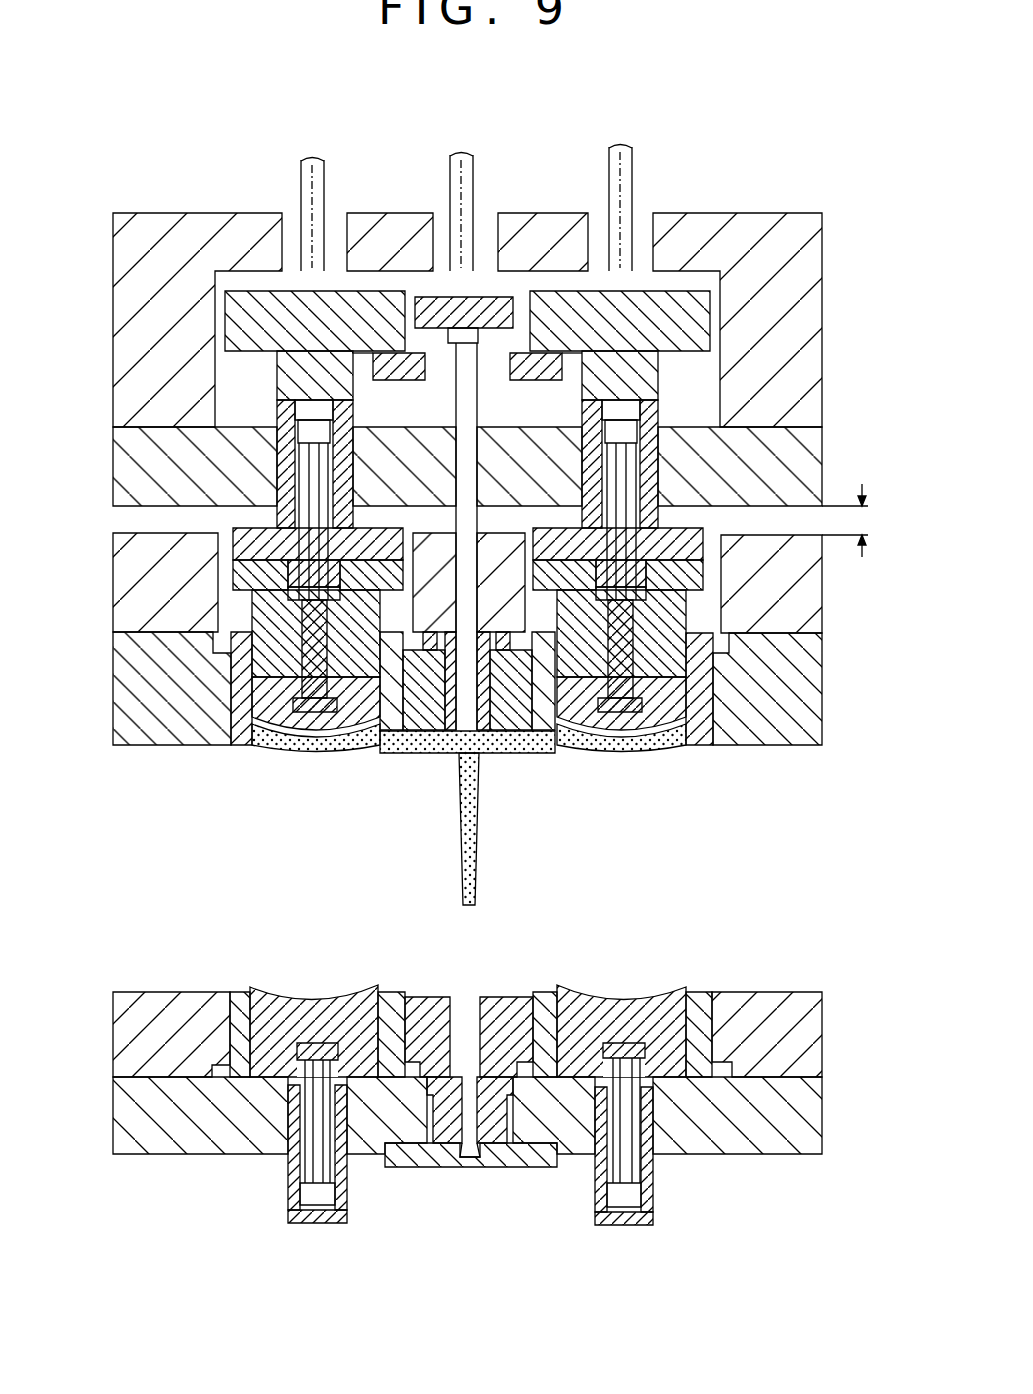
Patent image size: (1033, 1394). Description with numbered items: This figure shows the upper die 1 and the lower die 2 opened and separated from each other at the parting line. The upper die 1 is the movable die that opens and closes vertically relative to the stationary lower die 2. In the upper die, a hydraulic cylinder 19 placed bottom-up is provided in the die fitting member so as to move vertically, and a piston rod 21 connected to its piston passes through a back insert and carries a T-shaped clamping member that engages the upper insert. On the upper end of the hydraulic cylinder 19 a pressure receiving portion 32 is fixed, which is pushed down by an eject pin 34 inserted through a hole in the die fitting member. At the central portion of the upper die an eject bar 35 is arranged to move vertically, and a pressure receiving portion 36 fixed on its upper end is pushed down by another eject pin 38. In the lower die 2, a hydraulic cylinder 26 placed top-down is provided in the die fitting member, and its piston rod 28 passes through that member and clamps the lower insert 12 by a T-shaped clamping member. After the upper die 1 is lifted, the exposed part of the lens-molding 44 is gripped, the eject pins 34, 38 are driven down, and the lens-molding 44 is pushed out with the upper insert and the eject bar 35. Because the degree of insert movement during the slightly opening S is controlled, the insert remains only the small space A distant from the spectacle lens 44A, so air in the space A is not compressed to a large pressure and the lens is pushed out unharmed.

The upper die 1 is at (100, 588).
The lower die 2 is at (105, 1058).
The insert 12 is at (270, 1053).
The hydraulic cylinder 19 is at (355, 408).
The piston rod 21 is at (310, 472).
The hydraulic cylinder 26 is at (297, 1224).
The piston rod 28 is at (318, 1167).
The pressure receiving portion 32 is at (252, 297).
The eject pin 34 is at (325, 177).
The eject bar 35 is at (470, 397).
The pressure receiving portion 36 is at (502, 294).
The eject pin 38 is at (473, 177).
The lens-molding 44 is at (372, 755).
The spectacle lens 44A is at (300, 752).
The space A is at (252, 716).
The slightly opening S is at (854, 520).